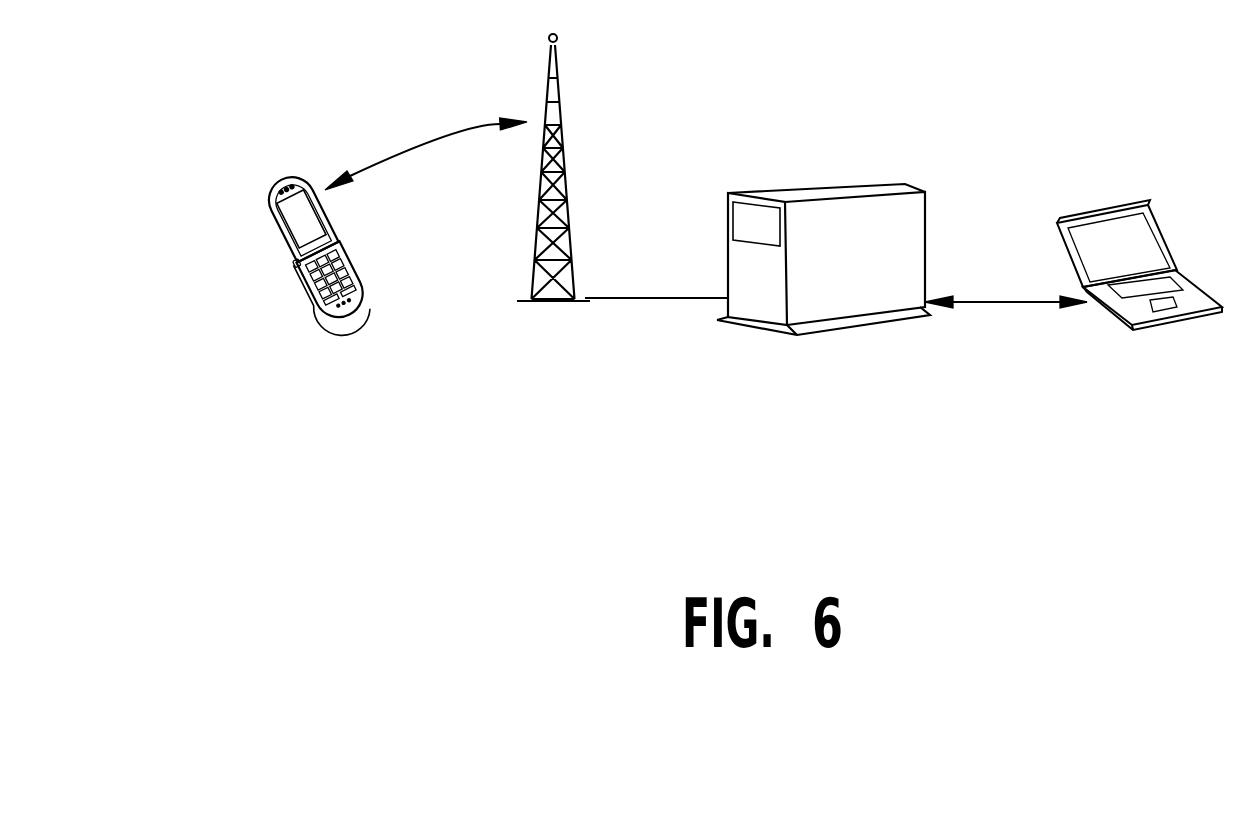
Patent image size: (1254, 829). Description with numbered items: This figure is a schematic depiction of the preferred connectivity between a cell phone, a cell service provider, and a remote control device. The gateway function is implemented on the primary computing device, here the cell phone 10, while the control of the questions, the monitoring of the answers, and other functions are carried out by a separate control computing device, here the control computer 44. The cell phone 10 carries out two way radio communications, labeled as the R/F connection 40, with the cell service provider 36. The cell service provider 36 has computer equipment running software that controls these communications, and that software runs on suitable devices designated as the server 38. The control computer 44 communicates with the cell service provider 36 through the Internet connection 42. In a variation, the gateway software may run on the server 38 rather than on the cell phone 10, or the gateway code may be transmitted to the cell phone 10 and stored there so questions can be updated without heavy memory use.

The cell phone 10 is at (320, 312).
The cell service provider 36 is at (560, 110).
The server 38 is at (840, 178).
The R/F connection 40 is at (400, 132).
The Internet connection 42 is at (970, 328).
The control computer 44 is at (1139, 227).